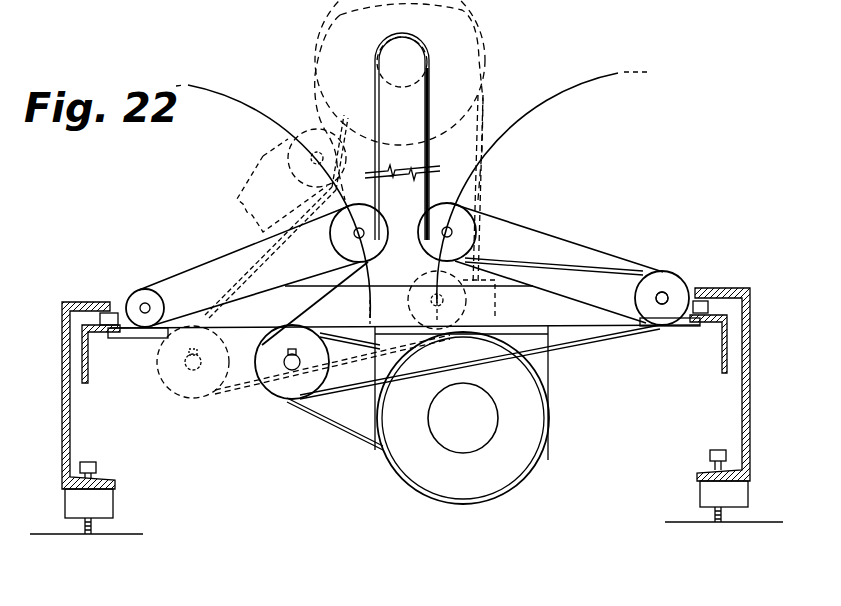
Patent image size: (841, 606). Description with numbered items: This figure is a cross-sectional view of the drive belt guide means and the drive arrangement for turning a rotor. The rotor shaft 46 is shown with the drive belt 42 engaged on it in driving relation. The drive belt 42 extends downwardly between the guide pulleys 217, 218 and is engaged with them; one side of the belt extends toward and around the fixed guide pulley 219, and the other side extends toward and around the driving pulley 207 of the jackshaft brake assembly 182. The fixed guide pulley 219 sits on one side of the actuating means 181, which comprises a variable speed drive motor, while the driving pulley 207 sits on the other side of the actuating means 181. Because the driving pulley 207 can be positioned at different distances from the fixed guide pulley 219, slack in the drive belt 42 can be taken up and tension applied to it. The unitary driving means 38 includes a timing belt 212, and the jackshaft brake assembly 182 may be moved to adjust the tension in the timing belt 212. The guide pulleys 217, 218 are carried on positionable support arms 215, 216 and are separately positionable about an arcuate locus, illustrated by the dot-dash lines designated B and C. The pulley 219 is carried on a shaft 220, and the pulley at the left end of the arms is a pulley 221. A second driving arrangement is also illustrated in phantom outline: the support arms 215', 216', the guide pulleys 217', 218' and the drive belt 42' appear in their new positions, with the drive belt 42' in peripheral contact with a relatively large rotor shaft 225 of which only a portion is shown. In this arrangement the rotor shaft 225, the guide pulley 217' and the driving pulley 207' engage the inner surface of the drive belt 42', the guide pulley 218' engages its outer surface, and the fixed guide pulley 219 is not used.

The unitary driving means 38 is at (333, 455).
The drive belt 42 is at (414, 136).
The drive belt 42' is at (512, 164).
The rotor shaft 46 is at (412, 88).
The actuating means 181 is at (412, 488).
The jackshaft brake assembly 182 is at (287, 416).
The driving pulley 207 is at (277, 372).
The driving pulley 207' is at (164, 368).
The timing belt 212 is at (350, 432).
The positionable support arm 215 is at (556, 263).
The support arm 215' is at (521, 298).
The positionable support arm 216 is at (249, 266).
The support arm 216' is at (276, 216).
The guide pulley 217 is at (481, 225).
The guide pulley 217' is at (421, 295).
The guide pulley 218 is at (335, 233).
The guide pulley 218' is at (308, 141).
The fixed guide pulley 219 is at (672, 276).
The pulley shaft 220 is at (662, 292).
The pulley 221 is at (145, 303).
The rotor shaft 225 is at (488, 32).
The arcuate locus B is at (617, 73).
The arcuate locus C is at (222, 95).